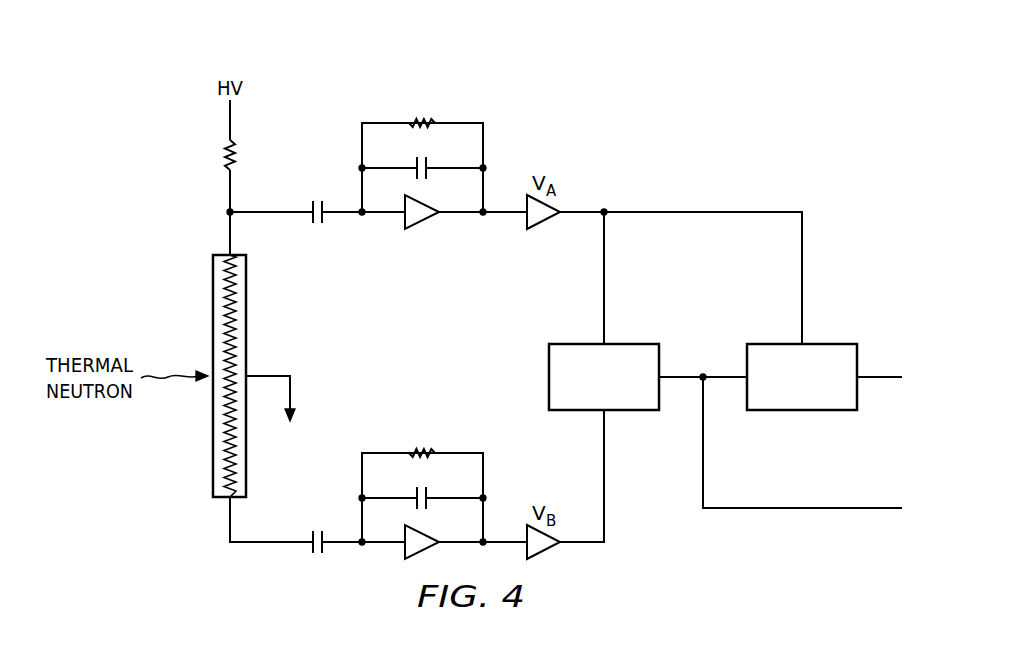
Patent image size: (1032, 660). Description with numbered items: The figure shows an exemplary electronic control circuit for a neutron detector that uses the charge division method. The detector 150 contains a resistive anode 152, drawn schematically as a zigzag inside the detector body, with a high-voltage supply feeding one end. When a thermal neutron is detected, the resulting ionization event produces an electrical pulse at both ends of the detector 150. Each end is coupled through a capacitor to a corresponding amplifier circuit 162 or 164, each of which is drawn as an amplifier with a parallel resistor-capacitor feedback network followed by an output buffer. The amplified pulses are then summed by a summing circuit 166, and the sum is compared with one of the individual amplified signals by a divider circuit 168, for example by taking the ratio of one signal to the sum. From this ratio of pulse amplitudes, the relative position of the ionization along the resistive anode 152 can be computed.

The detector 150 is at (231, 376).
The resistive anode 152 is at (226, 445).
The amplifier circuit 162 is at (381, 424).
The amplifier circuit 164 is at (381, 94).
The summing circuit 166 is at (548, 377).
The divider circuit 168 is at (802, 410).